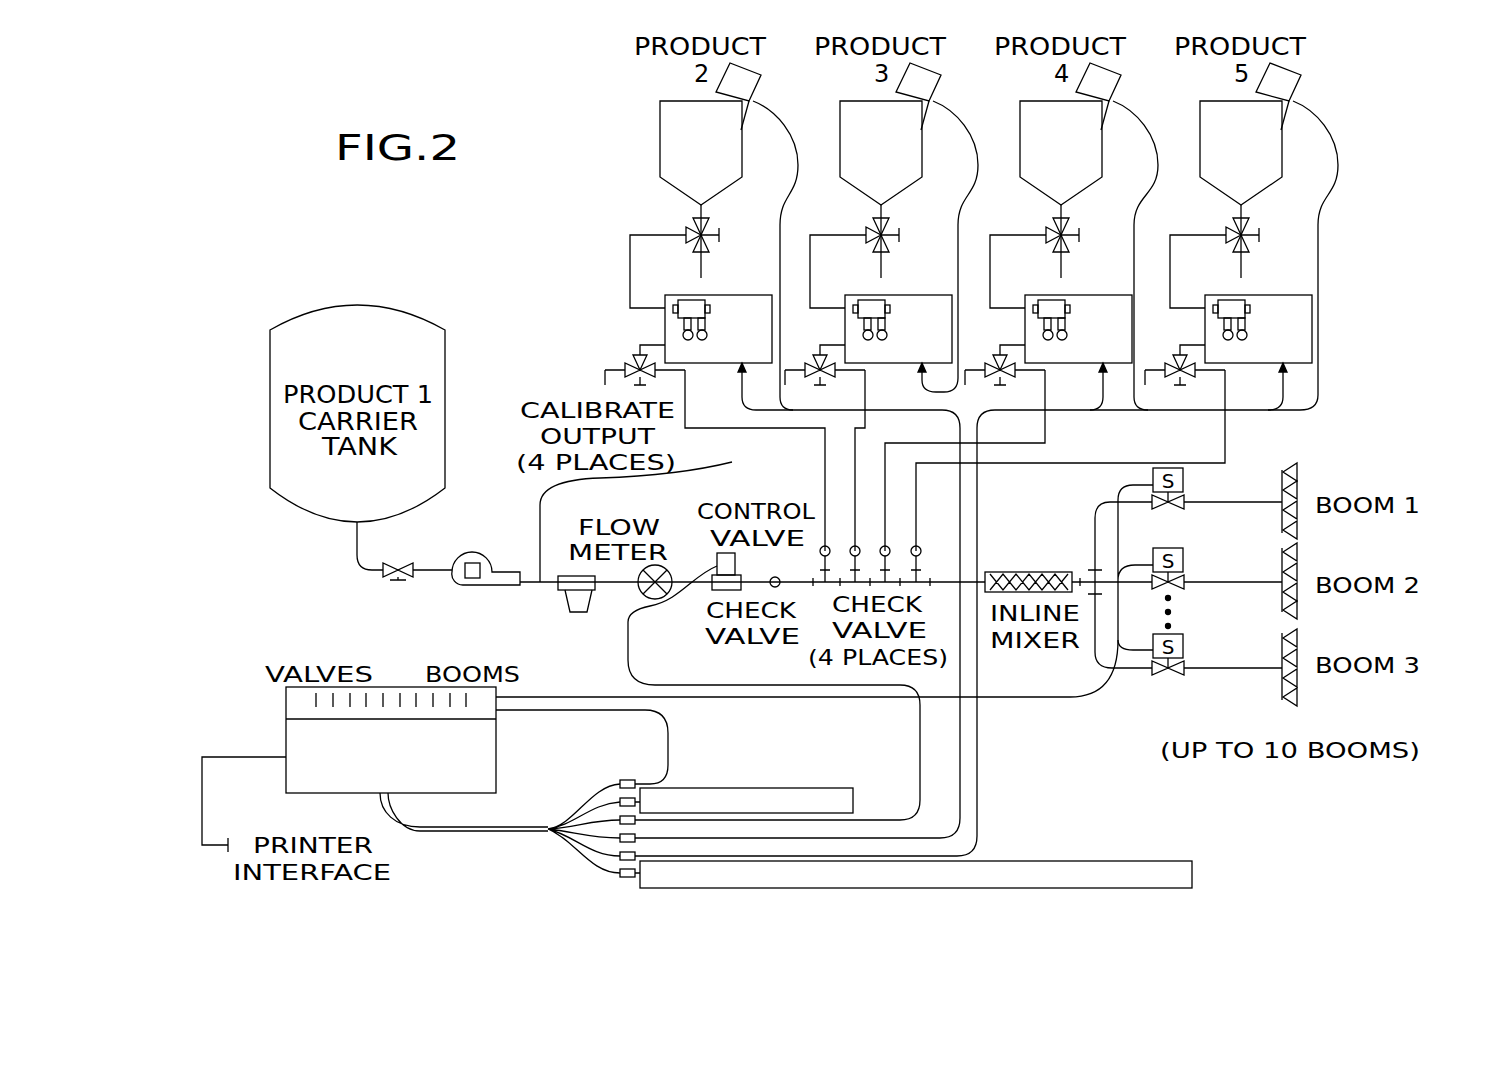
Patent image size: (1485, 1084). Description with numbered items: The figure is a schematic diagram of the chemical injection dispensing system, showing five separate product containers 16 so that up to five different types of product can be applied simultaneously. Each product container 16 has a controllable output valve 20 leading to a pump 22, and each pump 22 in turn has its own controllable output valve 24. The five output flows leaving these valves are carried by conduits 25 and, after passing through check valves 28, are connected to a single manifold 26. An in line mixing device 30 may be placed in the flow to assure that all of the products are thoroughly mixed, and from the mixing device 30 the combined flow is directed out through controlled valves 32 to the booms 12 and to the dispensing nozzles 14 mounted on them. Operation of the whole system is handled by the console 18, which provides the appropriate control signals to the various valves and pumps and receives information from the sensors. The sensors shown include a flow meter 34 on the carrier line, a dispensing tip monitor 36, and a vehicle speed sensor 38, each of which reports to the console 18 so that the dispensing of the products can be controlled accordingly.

The booms 12 is at (1283, 480).
The dispensing nozzles 14 is at (1297, 490).
The product containers 16 is at (352, 330).
The console 18 is at (292, 738).
The controllable output valve 20 is at (406, 562).
The pump 22 is at (472, 552).
The controllable output valve 24 is at (638, 362).
The conduits 25 is at (825, 466).
The manifold 26 is at (943, 582).
The check valves 28 is at (916, 546).
The in line mixing device 30 is at (1024, 572).
The controlled valves 32 is at (1186, 505).
The flow meter 34 is at (640, 600).
The dispensing tip monitor 36 is at (710, 788).
The vehicle speed sensor 38 is at (1005, 861).